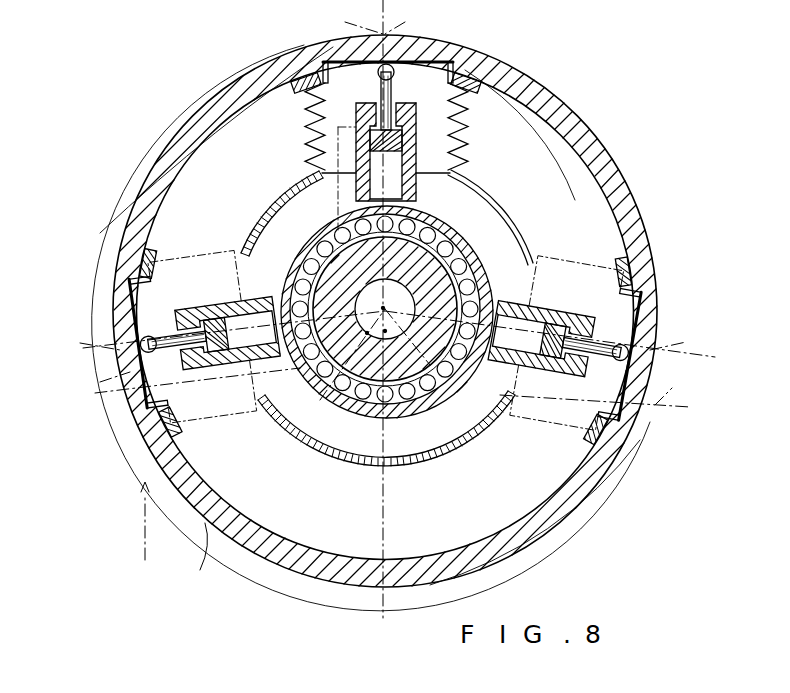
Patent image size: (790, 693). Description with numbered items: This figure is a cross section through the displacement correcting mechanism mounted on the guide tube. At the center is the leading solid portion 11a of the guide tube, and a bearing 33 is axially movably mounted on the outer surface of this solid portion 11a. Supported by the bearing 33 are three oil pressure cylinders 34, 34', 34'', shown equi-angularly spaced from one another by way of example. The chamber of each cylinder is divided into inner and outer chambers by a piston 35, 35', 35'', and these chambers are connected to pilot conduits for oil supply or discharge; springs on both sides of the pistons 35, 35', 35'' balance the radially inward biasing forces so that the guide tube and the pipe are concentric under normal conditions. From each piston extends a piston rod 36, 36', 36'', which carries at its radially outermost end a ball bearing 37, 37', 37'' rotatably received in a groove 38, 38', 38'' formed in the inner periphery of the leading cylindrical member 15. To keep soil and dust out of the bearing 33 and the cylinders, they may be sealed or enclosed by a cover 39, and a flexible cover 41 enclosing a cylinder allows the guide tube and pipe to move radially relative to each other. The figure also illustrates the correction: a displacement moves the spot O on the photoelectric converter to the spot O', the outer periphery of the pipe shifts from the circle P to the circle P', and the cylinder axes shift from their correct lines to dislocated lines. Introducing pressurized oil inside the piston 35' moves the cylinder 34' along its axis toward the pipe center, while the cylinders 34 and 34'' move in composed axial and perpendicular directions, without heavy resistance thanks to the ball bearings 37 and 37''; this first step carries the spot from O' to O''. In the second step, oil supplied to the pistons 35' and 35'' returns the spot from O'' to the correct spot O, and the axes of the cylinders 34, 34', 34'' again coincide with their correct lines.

The leading cylindrical member 15 is at (572, 128).
The bearing 33 is at (478, 296).
The leading solid portion 11a is at (467, 227).
The oil pressure cylinder 34 is at (400, 166).
The piston 35 is at (436, 128).
The piston rod 36 is at (412, 97).
The ball bearing 37 is at (392, 45).
The groove 38 is at (386, 49).
The cover 39 is at (296, 182).
The flexible cover 41 is at (310, 117).
The oil pressure cylinder 34' is at (217, 347).
The piston 35' is at (229, 312).
The piston rod 36' is at (173, 318).
The ball bearing 37' is at (113, 342).
The groove 38' is at (129, 354).
The oil pressure cylinder 34'' is at (551, 356).
The piston 35'' is at (555, 318).
The piston rod 36'' is at (596, 326).
The ball bearing 37'' is at (649, 355).
The groove 38'' is at (629, 360).
The spot O is at (409, 292).
The spot O' is at (350, 351).
The spot O'' is at (401, 350).
The circle P is at (200, 561).
The circle P' is at (371, 328).